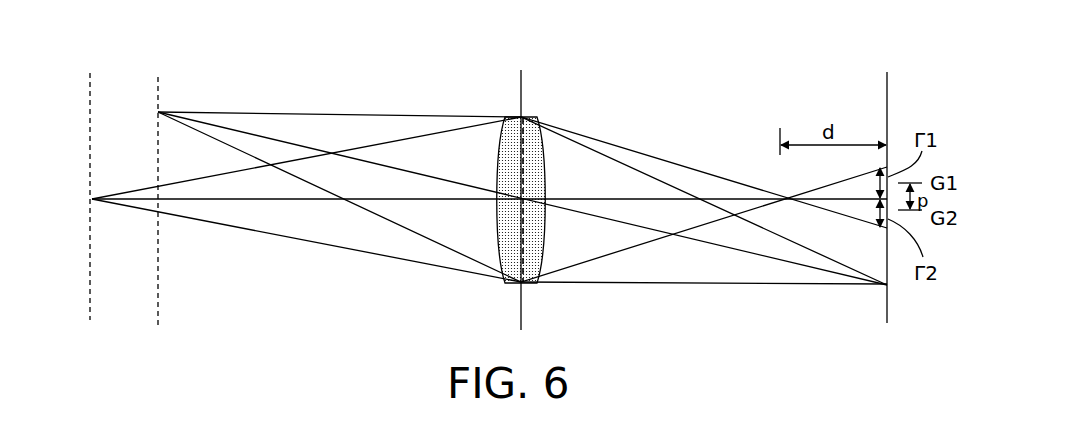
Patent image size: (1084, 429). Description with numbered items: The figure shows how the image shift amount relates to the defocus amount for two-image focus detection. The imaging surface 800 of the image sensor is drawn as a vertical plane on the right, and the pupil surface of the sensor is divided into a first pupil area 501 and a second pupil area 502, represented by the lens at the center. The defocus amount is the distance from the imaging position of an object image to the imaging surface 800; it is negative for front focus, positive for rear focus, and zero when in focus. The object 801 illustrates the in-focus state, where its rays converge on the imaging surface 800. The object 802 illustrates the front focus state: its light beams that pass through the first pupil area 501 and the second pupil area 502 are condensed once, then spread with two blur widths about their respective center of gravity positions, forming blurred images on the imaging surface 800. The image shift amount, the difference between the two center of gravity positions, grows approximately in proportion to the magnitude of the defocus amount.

The imaging surface 800 is at (887, 184).
The object 801 is at (499, 193).
The object 802 is at (464, 199).
The first pupil area 501 is at (547, 288).
The second pupil area 502 is at (530, 129).